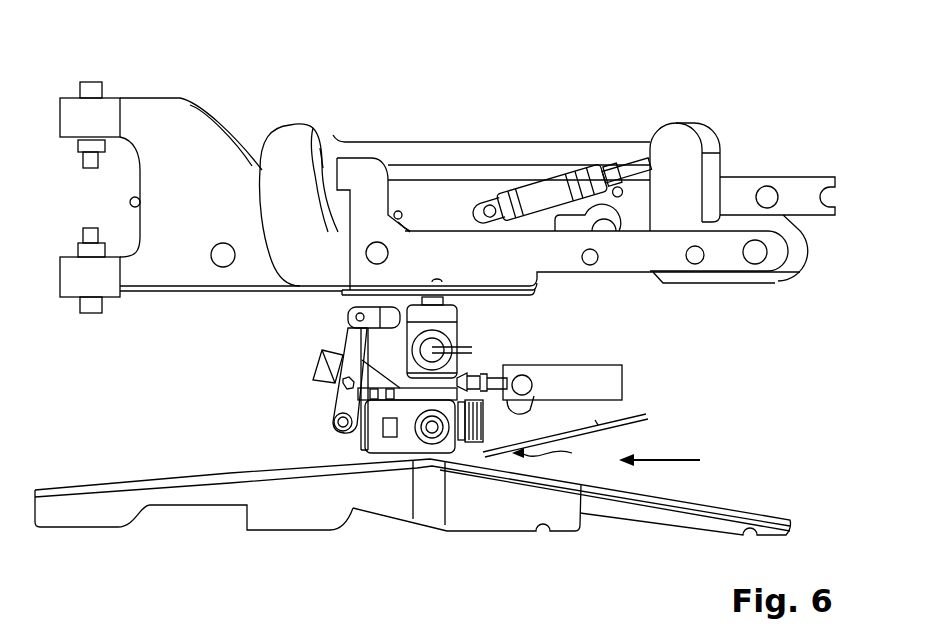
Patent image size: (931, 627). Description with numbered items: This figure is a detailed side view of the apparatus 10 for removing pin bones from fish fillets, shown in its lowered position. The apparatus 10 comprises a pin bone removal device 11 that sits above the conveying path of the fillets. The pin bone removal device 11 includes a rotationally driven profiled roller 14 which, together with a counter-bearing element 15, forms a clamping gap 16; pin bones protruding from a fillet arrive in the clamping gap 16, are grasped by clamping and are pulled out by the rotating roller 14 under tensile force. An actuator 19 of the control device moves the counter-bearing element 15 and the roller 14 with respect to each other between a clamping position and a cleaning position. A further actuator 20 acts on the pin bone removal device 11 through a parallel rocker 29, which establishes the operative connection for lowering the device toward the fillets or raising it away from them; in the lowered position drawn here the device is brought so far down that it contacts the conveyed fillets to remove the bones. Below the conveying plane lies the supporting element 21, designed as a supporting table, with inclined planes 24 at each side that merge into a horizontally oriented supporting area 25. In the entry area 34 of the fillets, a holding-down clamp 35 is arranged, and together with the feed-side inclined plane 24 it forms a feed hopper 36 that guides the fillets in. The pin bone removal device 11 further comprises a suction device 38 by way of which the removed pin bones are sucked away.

The apparatus 10 is at (140, 70).
The pin bone removal device 11 is at (262, 387).
The profiled roller 14 is at (465, 386).
The counter-bearing element 15 is at (335, 418).
The clamping gap 16 is at (420, 452).
The actuator 19 is at (600, 377).
The further actuator 20 is at (548, 197).
The supporting element 21 is at (505, 535).
The inclined planes 24 is at (83, 488).
The supporting area 25 is at (430, 463).
The parallel rocker 29 is at (617, 126).
The entry area 34 is at (556, 454).
The holding-down clamp 35 is at (643, 420).
The feed hopper 36 is at (685, 458).
The suction device 38 is at (316, 362).